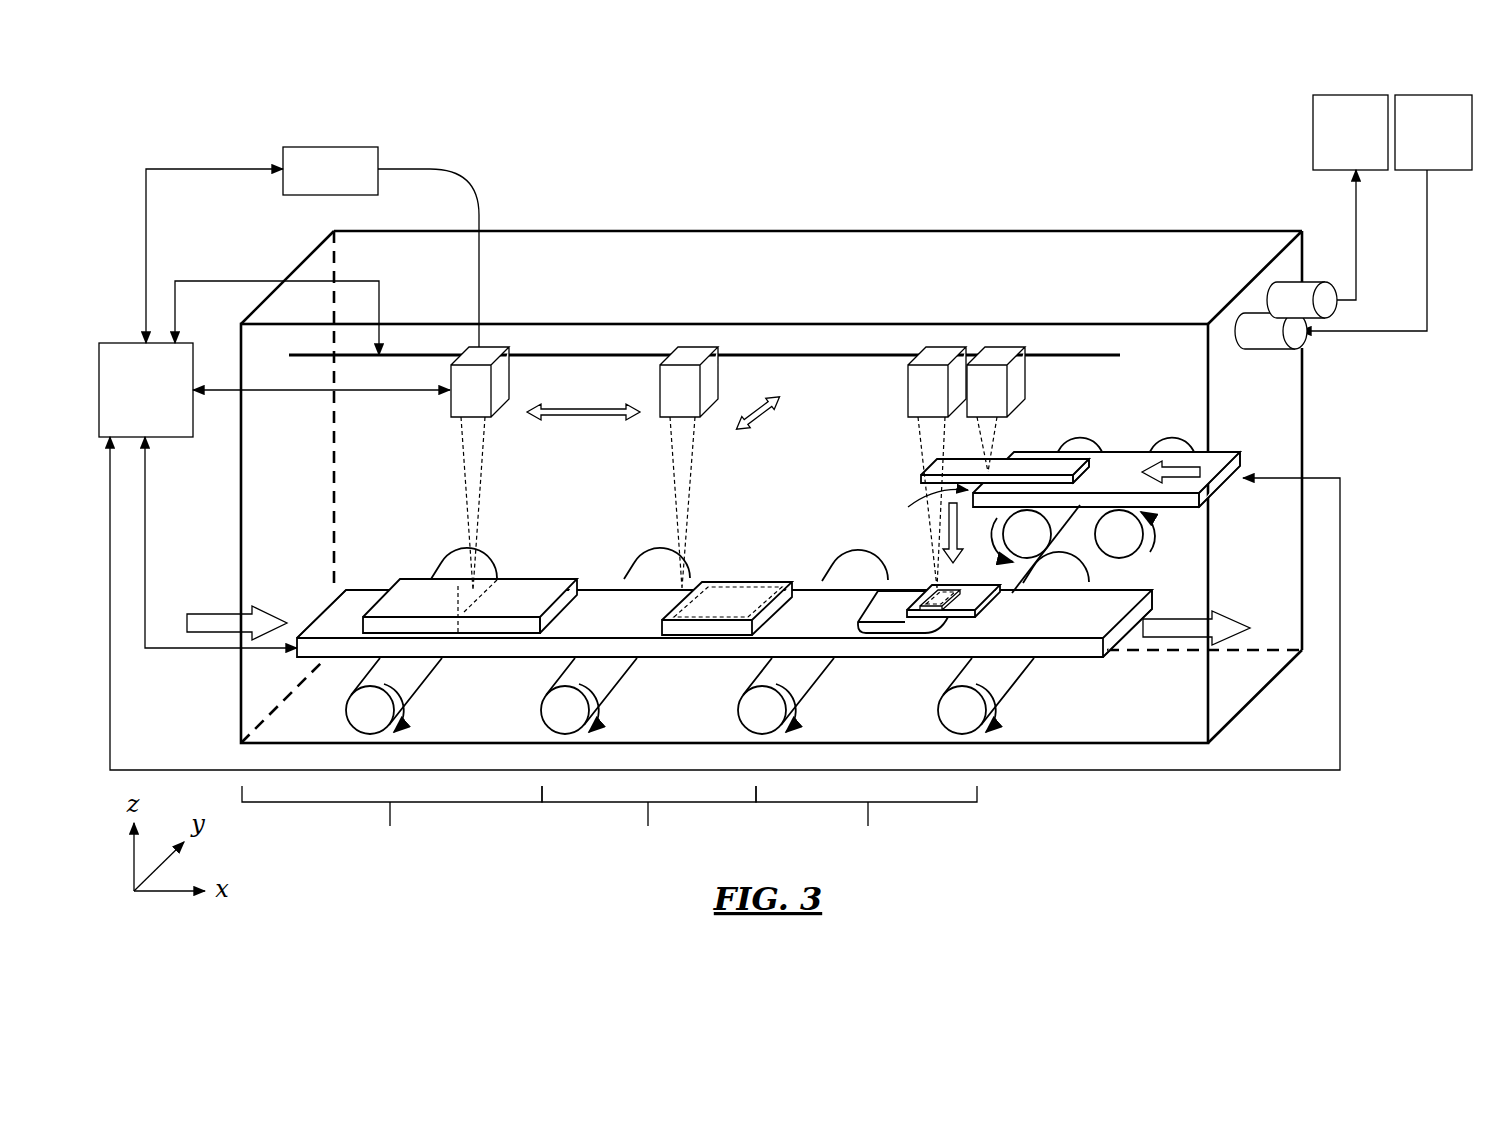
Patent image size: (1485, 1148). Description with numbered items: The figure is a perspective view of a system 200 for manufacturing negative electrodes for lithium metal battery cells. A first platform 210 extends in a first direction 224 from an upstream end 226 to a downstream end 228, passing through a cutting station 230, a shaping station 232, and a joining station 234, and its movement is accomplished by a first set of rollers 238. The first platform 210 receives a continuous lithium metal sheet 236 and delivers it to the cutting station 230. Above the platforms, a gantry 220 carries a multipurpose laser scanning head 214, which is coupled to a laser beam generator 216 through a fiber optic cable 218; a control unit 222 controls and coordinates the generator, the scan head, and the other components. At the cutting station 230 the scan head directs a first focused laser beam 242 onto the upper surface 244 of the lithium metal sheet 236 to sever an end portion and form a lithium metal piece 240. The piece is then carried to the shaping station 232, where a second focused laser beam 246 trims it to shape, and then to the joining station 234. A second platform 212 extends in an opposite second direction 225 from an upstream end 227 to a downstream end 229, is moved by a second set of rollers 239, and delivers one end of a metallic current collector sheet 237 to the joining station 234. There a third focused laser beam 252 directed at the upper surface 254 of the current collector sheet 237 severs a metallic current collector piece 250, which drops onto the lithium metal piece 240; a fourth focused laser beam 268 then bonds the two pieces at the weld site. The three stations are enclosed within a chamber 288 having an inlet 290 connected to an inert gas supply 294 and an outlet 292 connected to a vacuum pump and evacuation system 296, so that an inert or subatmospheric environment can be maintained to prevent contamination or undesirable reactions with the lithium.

The system 200 is at (1023, 160).
The chamber 288 is at (737, 231).
The laser beam generator 216 is at (330, 171).
The fiber optic cable 218 is at (480, 182).
The control unit 222 is at (719, 469).
The gantry 220 is at (792, 354).
The multipurpose laser scanning head 214 is at (497, 347).
The first focused laser beam 242 is at (481, 462).
The second focused laser beam 246 is at (690, 462).
The fourth focused laser beam 268 is at (917, 440).
The third focused laser beam 252 is at (992, 445).
The first platform 210 is at (367, 588).
The upstream end 226 is at (335, 660).
The first direction 224 is at (1163, 633).
The downstream end 228 is at (1088, 660).
The lithium metal sheet 236 is at (412, 579).
The second direction 225 is at (1180, 450).
The first set of rollers 238 is at (540, 706).
The second set of rollers 239 is at (1120, 562).
The lithium metal piece 240 is at (528, 578).
The upper surface 244 is at (470, 606).
The upstream end 227 is at (1245, 460).
The metallic current collector sheet 237 is at (1097, 475).
The second platform 212 is at (1215, 495).
The upper surface 254 is at (1077, 457).
The metallic current collector piece 250 is at (919, 480).
The downstream end 229 is at (911, 526).
The cutting station 230 is at (392, 827).
The shaping station 232 is at (649, 827).
The joining station 234 is at (866, 827).
The inlet 290 is at (1270, 350).
The outlet 292 is at (1268, 292).
The inert gas supply 294 is at (1386, 213).
The vacuum pump and evacuation system 296 is at (1350, 197).